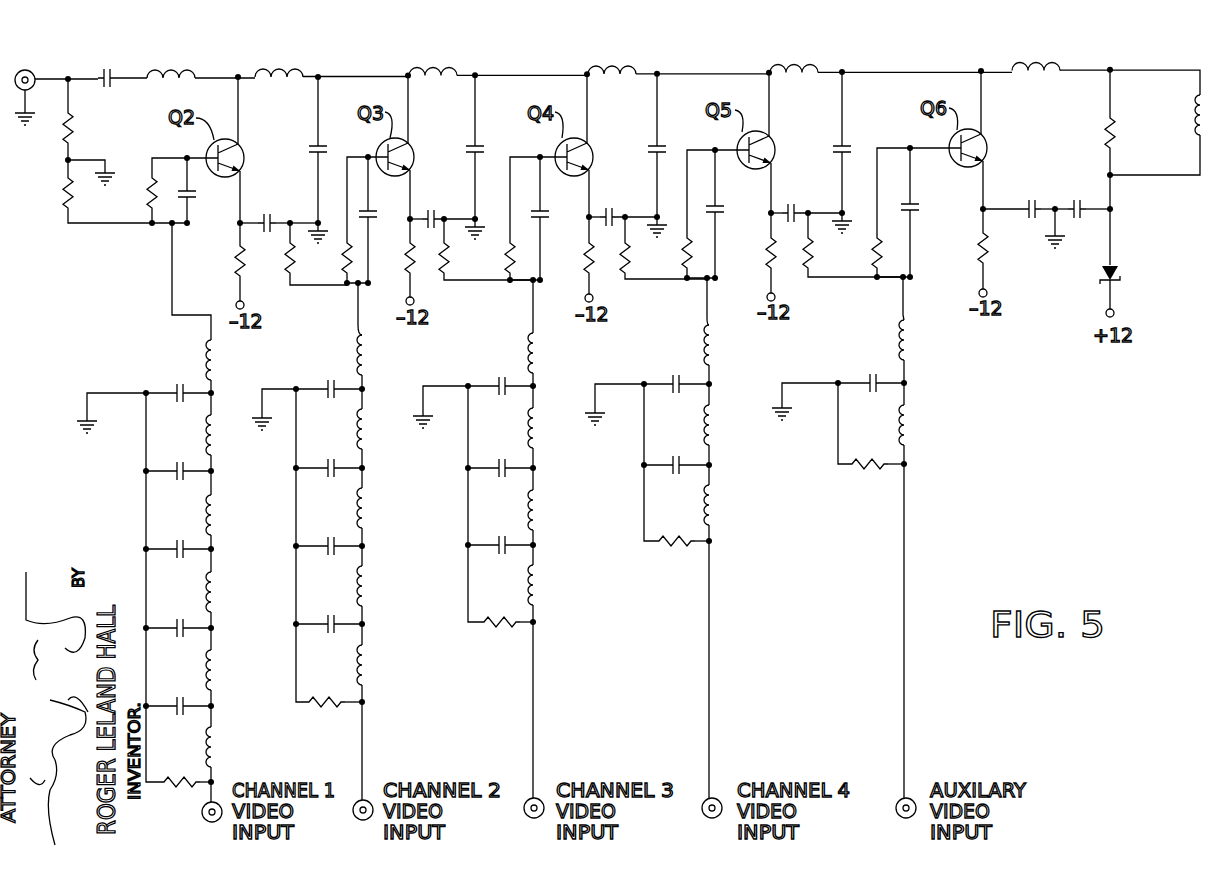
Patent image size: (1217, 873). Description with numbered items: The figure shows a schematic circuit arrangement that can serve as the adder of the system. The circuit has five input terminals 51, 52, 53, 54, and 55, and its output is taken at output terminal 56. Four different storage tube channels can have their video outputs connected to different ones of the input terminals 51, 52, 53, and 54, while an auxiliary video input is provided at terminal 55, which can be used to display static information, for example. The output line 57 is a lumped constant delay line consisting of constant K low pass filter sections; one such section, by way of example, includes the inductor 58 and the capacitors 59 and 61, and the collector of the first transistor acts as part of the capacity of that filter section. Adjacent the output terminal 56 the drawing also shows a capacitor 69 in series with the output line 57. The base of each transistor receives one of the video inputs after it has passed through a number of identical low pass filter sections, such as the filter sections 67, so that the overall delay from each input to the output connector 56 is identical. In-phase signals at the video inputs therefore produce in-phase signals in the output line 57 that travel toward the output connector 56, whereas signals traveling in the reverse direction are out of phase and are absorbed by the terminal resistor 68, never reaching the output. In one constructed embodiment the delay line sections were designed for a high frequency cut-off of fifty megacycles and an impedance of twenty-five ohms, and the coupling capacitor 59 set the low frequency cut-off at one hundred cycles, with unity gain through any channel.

The input terminal 51 is at (202, 813).
The input terminal 52 is at (359, 799).
The input terminal 53 is at (524, 808).
The input terminal 54 is at (702, 804).
The auxiliary video input terminal 55 is at (896, 808).
The output terminal 56 is at (33, 70).
The output line 57 is at (530, 73).
The inductor 58 is at (305, 74).
The capacitor 59 is at (313, 146).
The capacitor 61 is at (273, 213).
The filter sections 67 is at (230, 546).
The terminal resistor 68 is at (1117, 138).
The input coupling capacitor 69 is at (114, 72).